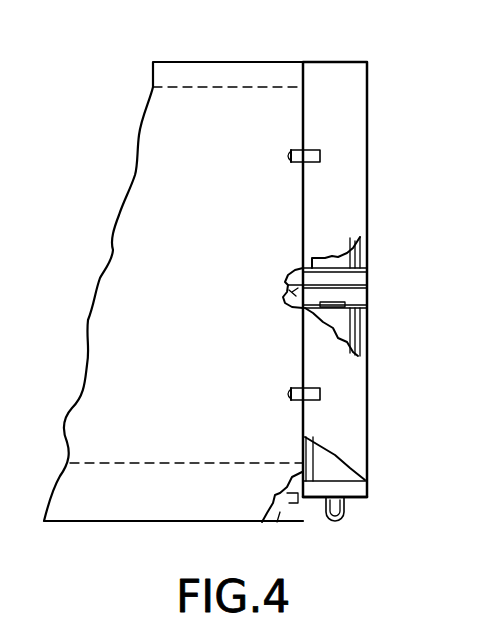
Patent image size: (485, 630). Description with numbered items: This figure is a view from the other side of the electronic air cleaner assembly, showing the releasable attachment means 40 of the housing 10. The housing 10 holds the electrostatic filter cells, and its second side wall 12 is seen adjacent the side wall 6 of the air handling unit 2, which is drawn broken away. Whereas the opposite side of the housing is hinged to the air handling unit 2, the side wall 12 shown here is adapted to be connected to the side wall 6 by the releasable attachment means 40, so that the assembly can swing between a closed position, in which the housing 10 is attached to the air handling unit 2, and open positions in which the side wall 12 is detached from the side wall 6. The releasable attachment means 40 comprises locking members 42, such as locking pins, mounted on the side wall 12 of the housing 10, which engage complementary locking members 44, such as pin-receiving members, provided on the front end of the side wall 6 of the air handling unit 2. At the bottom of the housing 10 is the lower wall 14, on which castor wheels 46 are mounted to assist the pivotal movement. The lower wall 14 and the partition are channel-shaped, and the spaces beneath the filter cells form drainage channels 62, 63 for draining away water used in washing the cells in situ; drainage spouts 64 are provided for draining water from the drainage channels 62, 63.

The air handling unit 2 is at (197, 60).
The side wall of the air handling unit 6 is at (193, 304).
The housing 10 is at (351, 59).
The second side wall 12 is at (345, 97).
The lower wall 14 is at (352, 499).
The releasable attachment means 40 is at (316, 146).
The locking member 42 is at (322, 152).
The complementary locking member 44 is at (290, 155).
The castor wheel 46 is at (337, 521).
The drainage channel 62 is at (350, 276).
The drainage channel 63 is at (356, 490).
The drainage spout 64 is at (287, 276).